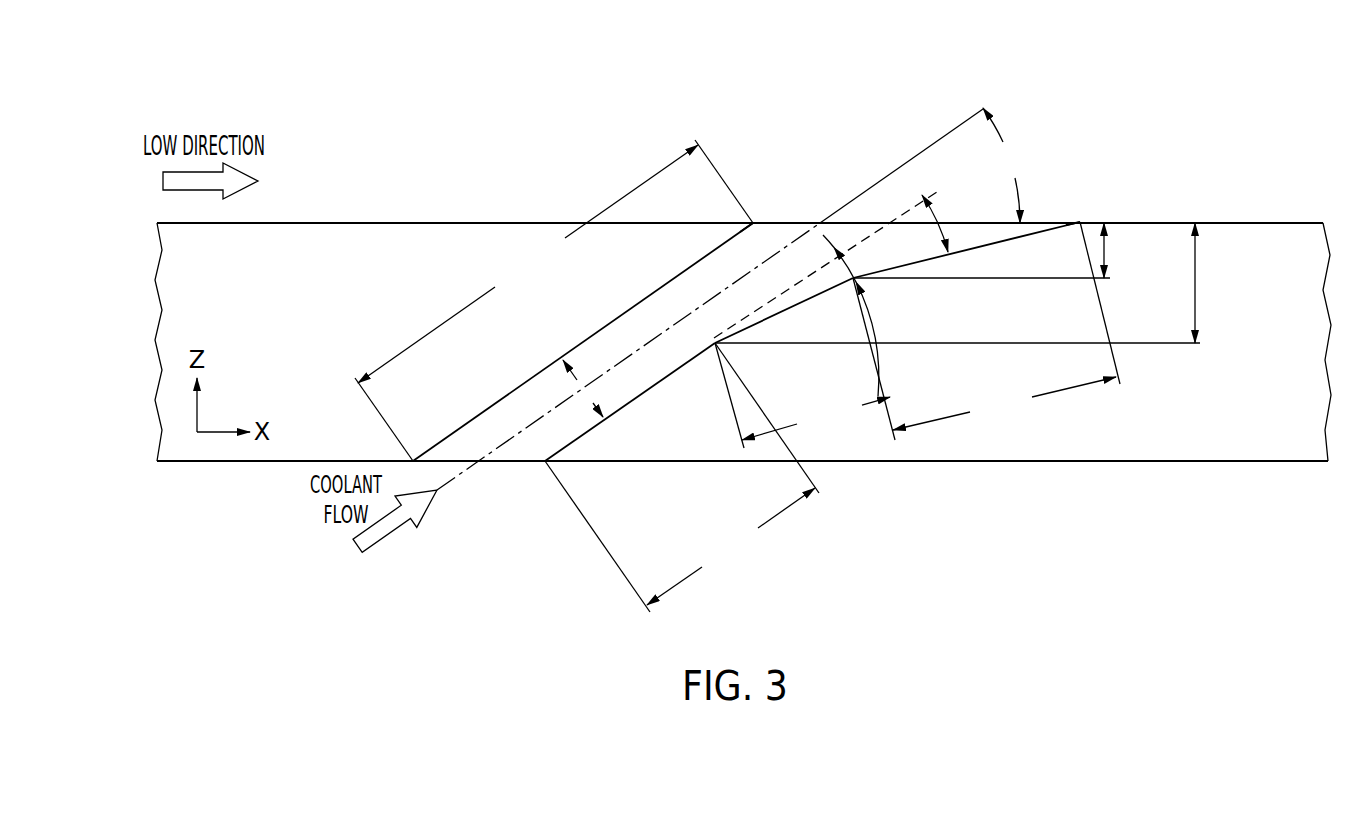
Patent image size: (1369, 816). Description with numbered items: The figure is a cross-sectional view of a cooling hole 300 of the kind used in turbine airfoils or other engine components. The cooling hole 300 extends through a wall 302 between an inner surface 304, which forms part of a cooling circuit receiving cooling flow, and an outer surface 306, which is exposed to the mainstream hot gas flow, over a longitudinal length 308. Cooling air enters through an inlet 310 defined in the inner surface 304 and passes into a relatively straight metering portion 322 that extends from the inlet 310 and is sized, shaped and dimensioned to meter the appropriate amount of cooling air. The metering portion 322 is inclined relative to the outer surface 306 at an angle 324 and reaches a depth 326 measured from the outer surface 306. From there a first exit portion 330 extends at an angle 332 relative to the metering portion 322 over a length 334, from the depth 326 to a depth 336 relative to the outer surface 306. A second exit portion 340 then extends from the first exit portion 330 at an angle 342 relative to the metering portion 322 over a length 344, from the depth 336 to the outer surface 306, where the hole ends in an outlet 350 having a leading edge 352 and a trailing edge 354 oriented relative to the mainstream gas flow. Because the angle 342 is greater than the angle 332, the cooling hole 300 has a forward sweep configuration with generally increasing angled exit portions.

The cooling hole 300 is at (579, 242).
The wall 302 is at (350, 232).
The inner surface 304 is at (217, 463).
The outer surface 306 is at (447, 221).
The longitudinal length 308 is at (554, 300).
The inlet 310 is at (515, 463).
The metering portion 322 is at (682, 477).
The angle 324 is at (736, 299).
The depth 326 is at (1198, 288).
The first exit portion 330 is at (783, 310).
The angle 332 is at (852, 258).
The length 334 is at (805, 363).
The depth 336 is at (1106, 250).
The second exit portion 340 is at (990, 246).
The angle 342 is at (937, 215).
The length 344 is at (1006, 326).
The outlet 350 is at (773, 221).
The leading edge 352 is at (758, 220).
The trailing edge 354 is at (1079, 221).